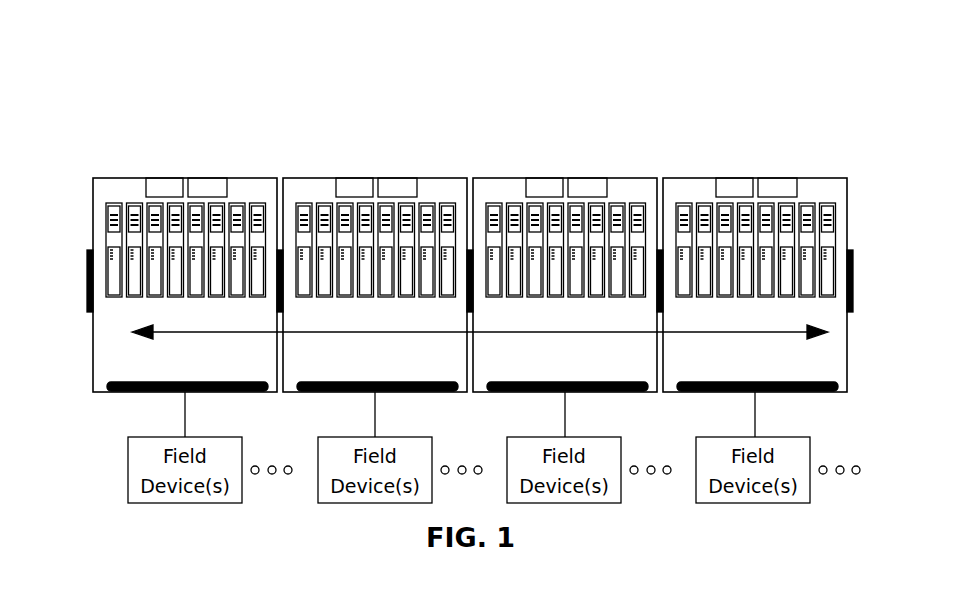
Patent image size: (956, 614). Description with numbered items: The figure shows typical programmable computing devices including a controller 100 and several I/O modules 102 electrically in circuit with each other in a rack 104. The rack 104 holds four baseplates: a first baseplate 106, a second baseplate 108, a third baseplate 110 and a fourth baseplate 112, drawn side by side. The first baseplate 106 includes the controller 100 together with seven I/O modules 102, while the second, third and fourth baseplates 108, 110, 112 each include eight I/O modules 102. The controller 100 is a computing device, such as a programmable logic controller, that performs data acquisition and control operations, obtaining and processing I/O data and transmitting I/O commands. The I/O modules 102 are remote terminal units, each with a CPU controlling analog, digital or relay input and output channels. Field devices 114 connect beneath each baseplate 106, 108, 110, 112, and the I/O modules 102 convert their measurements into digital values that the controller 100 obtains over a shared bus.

The controller 100 is at (115, 58).
The I/O modules 102 is at (495, 38).
The rack 104 is at (760, 146).
The first baseplate 106 is at (198, 393).
The second baseplate 108 is at (405, 393).
The third baseplate 110 is at (598, 393).
The fourth baseplate 112 is at (767, 393).
The field devices 114 is at (137, 437).